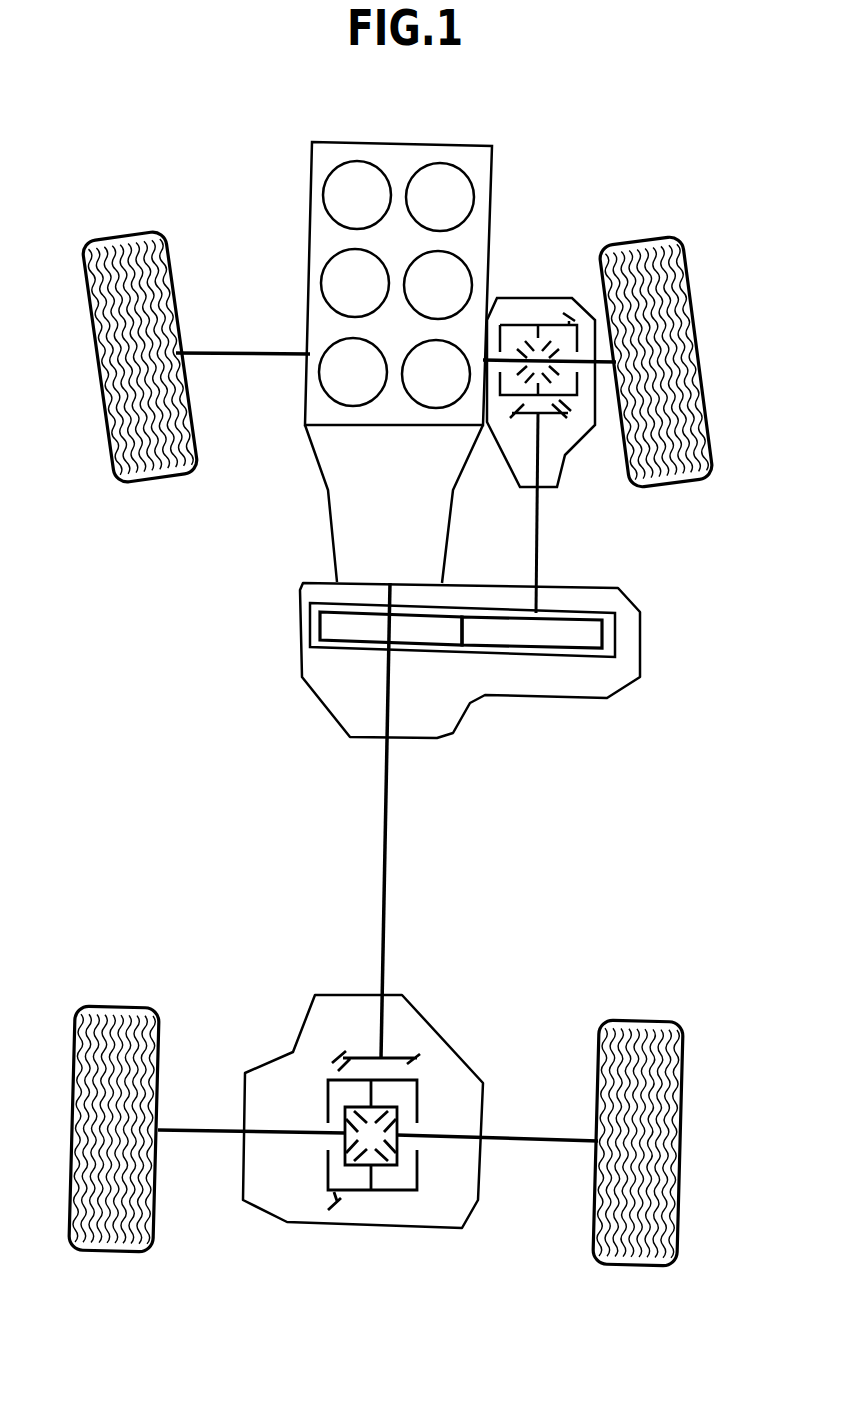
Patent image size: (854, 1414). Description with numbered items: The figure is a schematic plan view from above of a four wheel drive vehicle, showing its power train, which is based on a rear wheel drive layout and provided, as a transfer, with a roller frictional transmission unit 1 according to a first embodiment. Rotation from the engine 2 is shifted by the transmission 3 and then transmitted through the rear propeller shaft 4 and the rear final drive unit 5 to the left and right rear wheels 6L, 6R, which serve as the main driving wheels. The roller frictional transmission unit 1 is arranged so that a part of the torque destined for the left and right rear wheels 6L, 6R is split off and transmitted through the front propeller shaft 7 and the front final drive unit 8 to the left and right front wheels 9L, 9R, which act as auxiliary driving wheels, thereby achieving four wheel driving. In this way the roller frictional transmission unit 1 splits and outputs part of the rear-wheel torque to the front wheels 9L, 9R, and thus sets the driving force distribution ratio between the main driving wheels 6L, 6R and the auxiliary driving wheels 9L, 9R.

The roller frictional transmission unit 1 is at (647, 637).
The engine 2 is at (311, 160).
The transmission 3 is at (318, 462).
The rear propeller shaft 4 is at (386, 843).
The rear final drive unit 5 is at (450, 1055).
The left rear wheel 6L is at (108, 1252).
The right rear wheel 6R is at (636, 1265).
The front propeller shaft 7 is at (540, 553).
The front final drive unit 8 is at (540, 296).
The left front wheel 9L is at (118, 237).
The right front wheel 9R is at (638, 240).